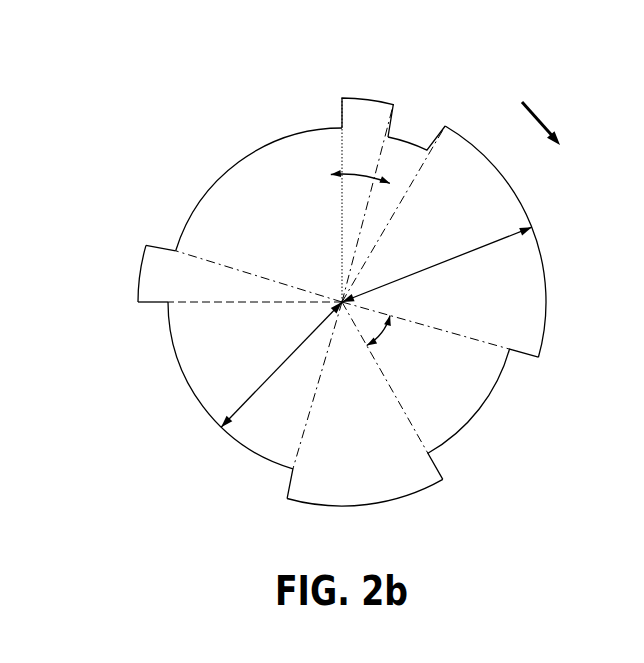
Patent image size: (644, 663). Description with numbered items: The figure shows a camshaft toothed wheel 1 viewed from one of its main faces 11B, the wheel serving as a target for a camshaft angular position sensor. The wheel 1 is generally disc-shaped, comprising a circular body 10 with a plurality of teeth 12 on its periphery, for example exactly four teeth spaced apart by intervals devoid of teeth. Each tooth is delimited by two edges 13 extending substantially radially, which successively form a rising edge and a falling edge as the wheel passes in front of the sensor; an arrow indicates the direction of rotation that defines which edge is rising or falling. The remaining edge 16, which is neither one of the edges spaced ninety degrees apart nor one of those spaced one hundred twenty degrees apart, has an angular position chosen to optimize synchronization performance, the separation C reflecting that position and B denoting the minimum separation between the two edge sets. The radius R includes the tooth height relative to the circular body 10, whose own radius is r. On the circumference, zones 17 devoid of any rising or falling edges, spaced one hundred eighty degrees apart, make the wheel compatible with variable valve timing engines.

The camshaft toothed wheel 1 is at (361, 275).
The circular body 10 is at (247, 448).
The main face 11B is at (282, 188).
The teeth 12 is at (393, 103).
The edges 13 is at (158, 243).
The remaining edge 16 is at (341, 112).
The zones devoid of tooth edges 17 is at (530, 208).